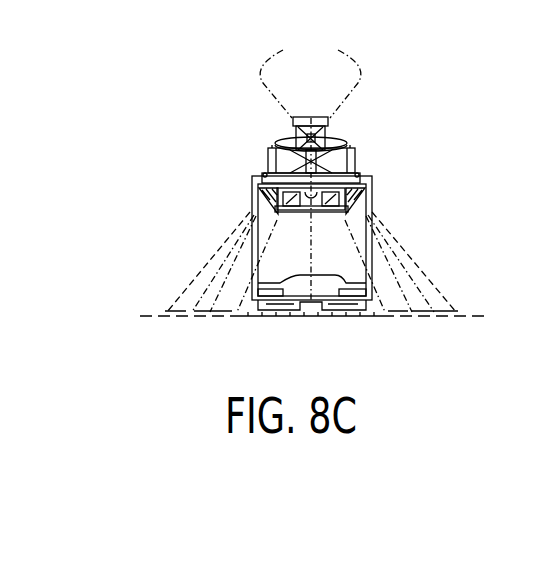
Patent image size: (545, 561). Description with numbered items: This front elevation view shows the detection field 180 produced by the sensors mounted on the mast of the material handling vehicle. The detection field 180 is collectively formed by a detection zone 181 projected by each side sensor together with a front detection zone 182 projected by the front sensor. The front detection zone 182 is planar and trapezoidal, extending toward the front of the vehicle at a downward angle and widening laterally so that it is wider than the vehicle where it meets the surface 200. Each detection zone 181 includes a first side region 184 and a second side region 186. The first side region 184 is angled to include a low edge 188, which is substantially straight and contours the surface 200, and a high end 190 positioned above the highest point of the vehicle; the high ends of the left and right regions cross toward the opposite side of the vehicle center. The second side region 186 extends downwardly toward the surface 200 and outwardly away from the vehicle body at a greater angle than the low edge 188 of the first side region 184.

The detection field 180 is at (342, 338).
The detection zone 181 is at (180, 193).
The front detection zone 182 is at (278, 264).
The first side region 184 is at (328, 142).
The second side region 186 is at (205, 257).
The low edge 188 is at (210, 318).
The high end 190 is at (310, 95).
The surface 200 is at (220, 318).